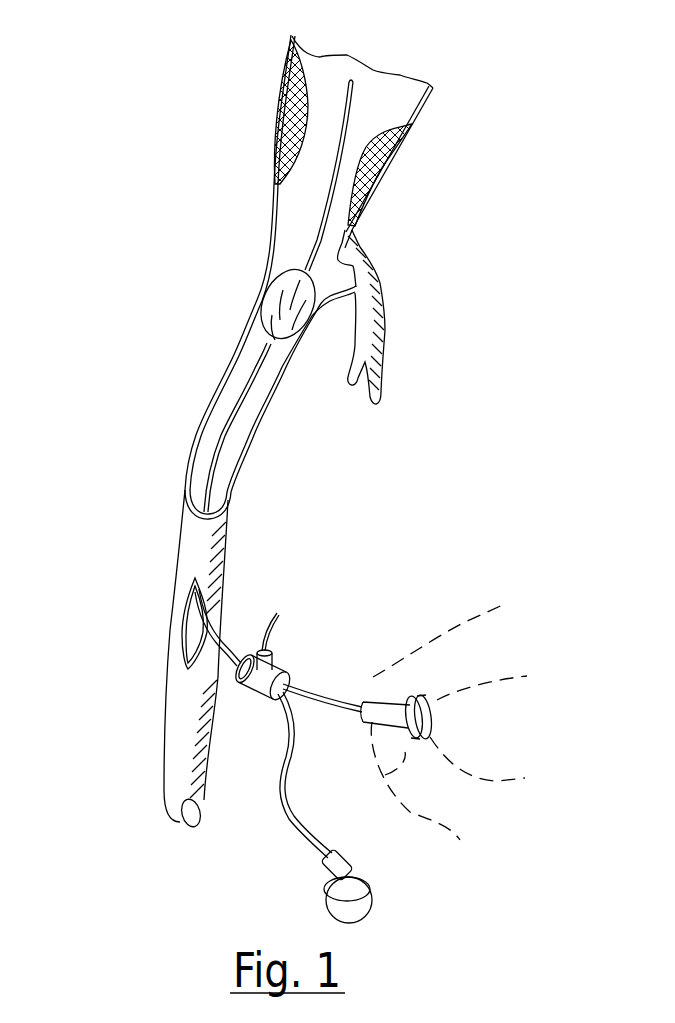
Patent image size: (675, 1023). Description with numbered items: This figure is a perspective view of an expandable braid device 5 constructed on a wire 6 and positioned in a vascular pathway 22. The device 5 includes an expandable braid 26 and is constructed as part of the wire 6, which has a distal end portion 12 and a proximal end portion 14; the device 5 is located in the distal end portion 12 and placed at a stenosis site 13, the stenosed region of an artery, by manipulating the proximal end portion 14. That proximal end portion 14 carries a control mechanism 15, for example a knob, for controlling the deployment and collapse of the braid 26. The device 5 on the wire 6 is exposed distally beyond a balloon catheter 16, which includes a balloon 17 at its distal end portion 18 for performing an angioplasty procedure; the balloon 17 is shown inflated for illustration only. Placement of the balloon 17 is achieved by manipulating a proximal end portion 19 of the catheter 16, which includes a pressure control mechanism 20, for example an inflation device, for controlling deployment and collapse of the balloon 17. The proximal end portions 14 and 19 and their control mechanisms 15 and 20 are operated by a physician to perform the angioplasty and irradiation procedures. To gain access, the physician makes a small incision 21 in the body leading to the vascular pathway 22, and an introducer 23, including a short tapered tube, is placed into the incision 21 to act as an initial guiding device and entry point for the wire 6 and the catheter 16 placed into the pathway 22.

The expandable braid device 5 is at (325, 152).
The wire 6 is at (327, 705).
The distal end portion 12 is at (335, 90).
The stenosis site 13 is at (278, 107).
The proximal end portion 14 is at (343, 680).
The control mechanism 15 is at (422, 718).
The balloon catheter 16 is at (195, 440).
The balloon 17 is at (263, 322).
The distal end portion 18 is at (255, 233).
The proximal end portion 19 is at (267, 797).
The pressure control mechanism 20 is at (350, 903).
The incision 21 is at (182, 640).
The vascular pathway 22 is at (216, 488).
The introducer 23 is at (273, 650).
The expandable braid 26 is at (350, 118).